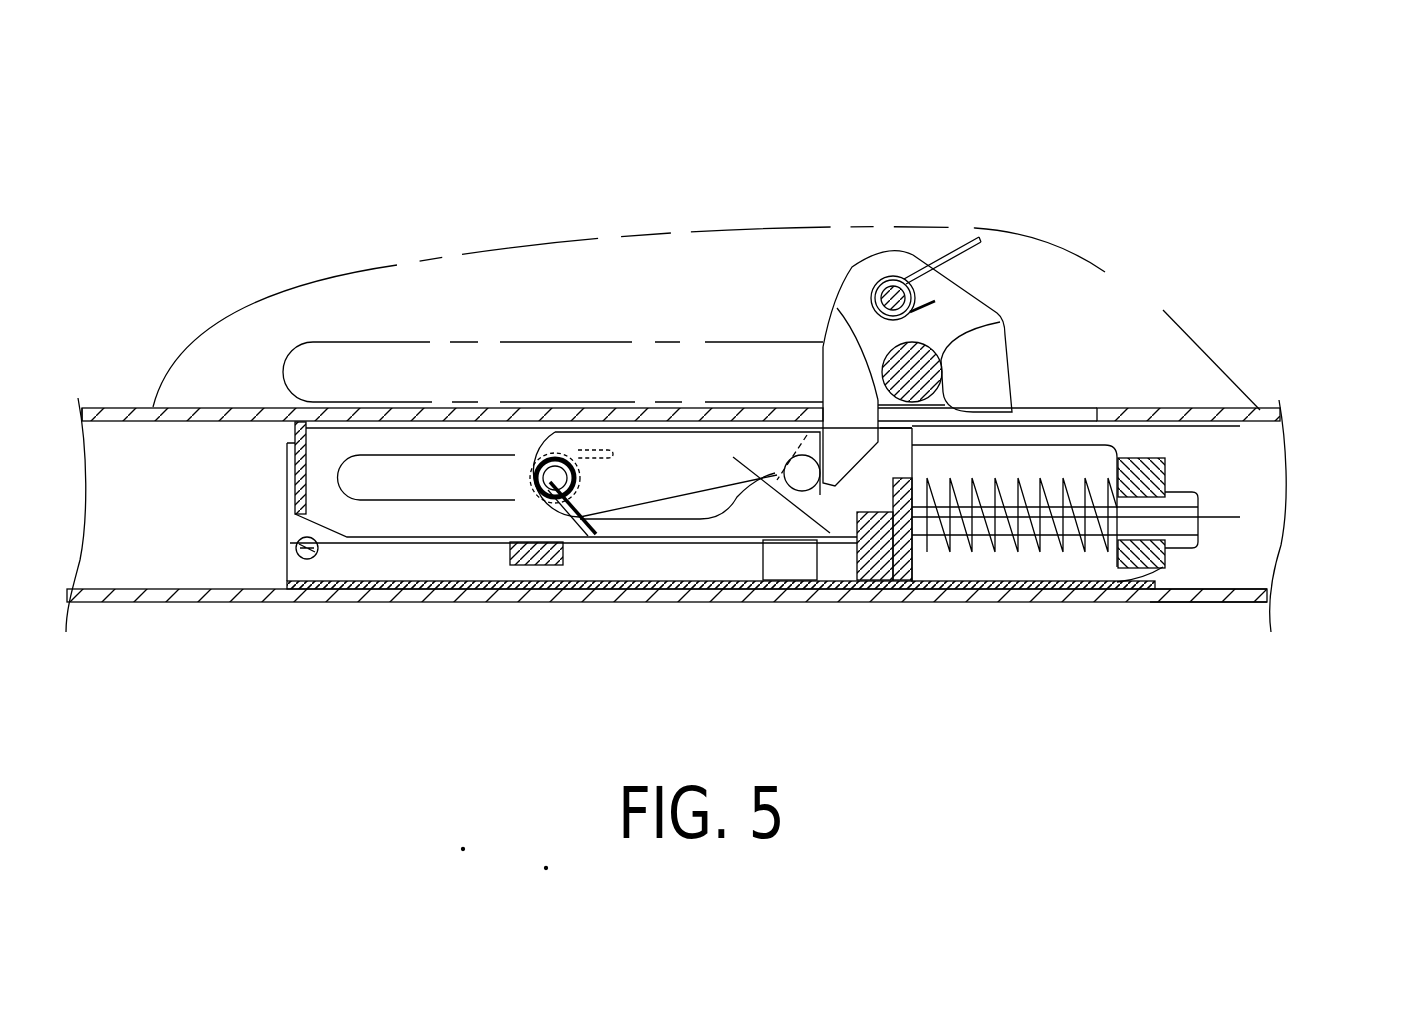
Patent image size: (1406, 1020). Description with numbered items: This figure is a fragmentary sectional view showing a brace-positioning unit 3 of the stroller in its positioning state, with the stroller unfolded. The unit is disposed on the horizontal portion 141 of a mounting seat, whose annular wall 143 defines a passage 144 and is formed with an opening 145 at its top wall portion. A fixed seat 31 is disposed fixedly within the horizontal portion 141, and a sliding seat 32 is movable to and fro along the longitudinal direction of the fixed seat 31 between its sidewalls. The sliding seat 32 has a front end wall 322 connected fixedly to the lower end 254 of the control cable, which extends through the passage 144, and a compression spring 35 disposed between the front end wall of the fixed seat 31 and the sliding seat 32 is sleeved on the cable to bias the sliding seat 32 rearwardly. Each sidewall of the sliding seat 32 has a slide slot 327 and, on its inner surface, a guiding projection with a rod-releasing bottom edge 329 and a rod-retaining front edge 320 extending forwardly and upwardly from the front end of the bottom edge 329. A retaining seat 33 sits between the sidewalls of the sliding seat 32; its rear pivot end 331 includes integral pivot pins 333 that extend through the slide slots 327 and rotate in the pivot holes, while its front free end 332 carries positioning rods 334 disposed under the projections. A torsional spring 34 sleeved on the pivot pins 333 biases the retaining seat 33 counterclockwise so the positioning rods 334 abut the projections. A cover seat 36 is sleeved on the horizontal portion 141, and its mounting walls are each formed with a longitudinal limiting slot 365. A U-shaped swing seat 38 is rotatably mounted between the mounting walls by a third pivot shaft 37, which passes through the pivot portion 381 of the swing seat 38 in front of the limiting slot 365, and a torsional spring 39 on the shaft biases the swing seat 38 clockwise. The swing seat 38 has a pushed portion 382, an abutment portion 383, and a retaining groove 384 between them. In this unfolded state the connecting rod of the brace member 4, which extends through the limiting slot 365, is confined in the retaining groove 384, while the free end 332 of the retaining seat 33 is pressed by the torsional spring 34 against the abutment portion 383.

The brace-positioning unit 3 is at (1067, 245).
The brace member 4 is at (987, 347).
The fixed seat 31 is at (1150, 598).
The sliding seat 32 is at (920, 463).
The retaining seat 33 is at (712, 522).
The torsional spring 34 is at (535, 565).
The compression spring 35 is at (1023, 547).
The cover seat 36 is at (827, 240).
The third pivot shaft 37 is at (945, 237).
The swing seat 38 is at (823, 332).
The torsional spring 39 is at (965, 246).
The horizontal portion 141 is at (1222, 607).
The annular wall 143 is at (1222, 603).
The passage 144 is at (1257, 470).
The opening 145 is at (1093, 412).
The lower end 254 is at (889, 560).
The rod-retaining front edge 320 is at (743, 514).
The front end wall 322 is at (913, 563).
The slide slot 327 is at (413, 465).
The rod-releasing bottom edge 329 is at (662, 520).
The rear pivot end 331 is at (520, 497).
The front free end 332 is at (790, 512).
The pivot pin 333 is at (593, 535).
The positioning rod 334 is at (803, 474).
The limiting slot 365 is at (515, 360).
The pivot portion 381 is at (882, 265).
The pushed portion 382 is at (1000, 322).
The abutment portion 383 is at (823, 402).
The retaining groove 384 is at (837, 308).